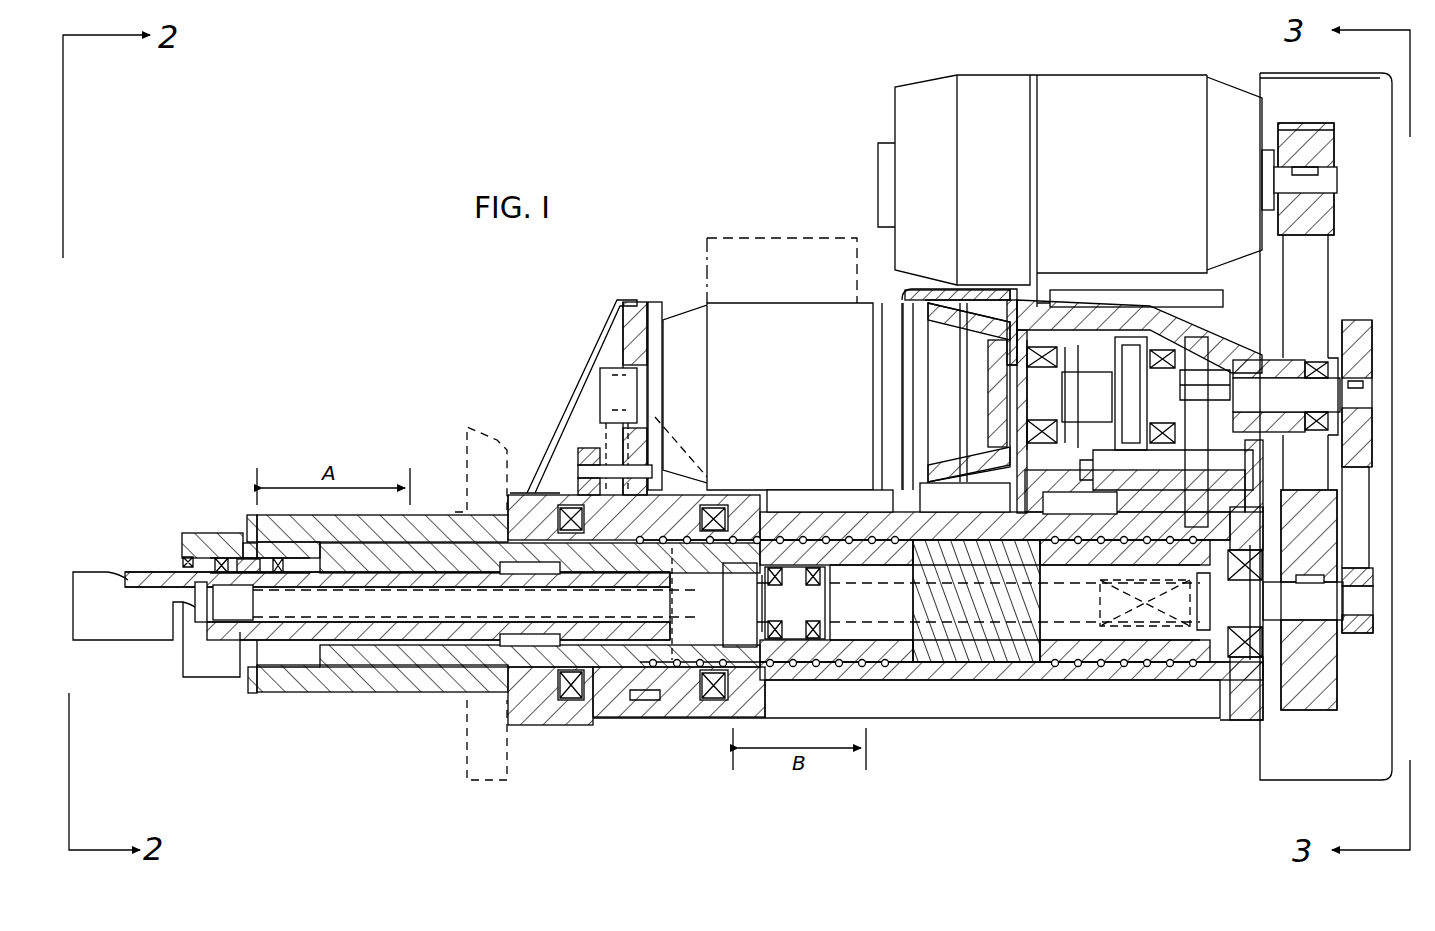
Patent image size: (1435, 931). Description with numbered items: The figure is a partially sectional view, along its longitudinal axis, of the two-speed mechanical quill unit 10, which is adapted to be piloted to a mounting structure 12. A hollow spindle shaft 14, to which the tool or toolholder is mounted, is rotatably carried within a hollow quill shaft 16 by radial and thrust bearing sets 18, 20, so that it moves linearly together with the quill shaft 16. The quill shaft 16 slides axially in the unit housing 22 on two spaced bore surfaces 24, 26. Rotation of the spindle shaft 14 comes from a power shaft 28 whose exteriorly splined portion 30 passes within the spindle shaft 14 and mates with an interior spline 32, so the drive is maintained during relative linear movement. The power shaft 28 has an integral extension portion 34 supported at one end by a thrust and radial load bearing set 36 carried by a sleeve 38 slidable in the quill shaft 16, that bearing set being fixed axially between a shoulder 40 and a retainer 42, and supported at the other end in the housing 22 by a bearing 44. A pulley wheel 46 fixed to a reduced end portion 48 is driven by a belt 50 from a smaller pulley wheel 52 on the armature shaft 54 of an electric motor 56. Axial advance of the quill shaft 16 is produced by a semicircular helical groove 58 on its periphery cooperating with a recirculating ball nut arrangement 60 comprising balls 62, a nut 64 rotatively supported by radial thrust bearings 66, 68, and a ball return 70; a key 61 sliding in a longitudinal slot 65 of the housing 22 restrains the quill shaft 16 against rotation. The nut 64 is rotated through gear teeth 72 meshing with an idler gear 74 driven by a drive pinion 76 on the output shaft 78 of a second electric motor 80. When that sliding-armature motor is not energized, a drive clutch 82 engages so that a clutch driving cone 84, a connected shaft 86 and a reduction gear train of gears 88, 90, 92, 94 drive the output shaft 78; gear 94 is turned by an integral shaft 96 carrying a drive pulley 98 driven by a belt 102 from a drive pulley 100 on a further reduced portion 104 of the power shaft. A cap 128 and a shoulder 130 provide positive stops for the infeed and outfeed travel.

The mechanical quill unit 10 is at (565, 383).
The mounting structure 12 is at (466, 445).
The spindle shaft 14 is at (142, 572).
The quill shaft 16 is at (226, 533).
The radial and thrust bearing set 18 is at (243, 556).
The radial and thrust bearing set 20 is at (520, 640).
The unit housing 22 is at (330, 700).
The bore surface 24 is at (366, 682).
The bore surface 26 is at (834, 672).
The power shaft 28 is at (805, 613).
The exteriorly splined portion 30 is at (598, 625).
The interior spline 32 is at (676, 603).
The extension portion 34 is at (903, 607).
The thrust and radial load bearing set 36 is at (842, 612).
The sleeve 38 is at (752, 690).
The shoulder 40 is at (830, 622).
The retainer 42 is at (776, 580).
The bearing 44 is at (1240, 655).
The pulley wheel 46 is at (1330, 686).
The reduced end portion 48 is at (1312, 615).
The belt 50 is at (1318, 278).
The smaller pulley wheel 52 is at (1320, 215).
The armature shaft 54 is at (1325, 184).
The electric motor 56 is at (1136, 75).
The semicircular helical groove 58 is at (1008, 662).
The recirculating ball nut arrangement 60 is at (645, 700).
The key 61 is at (1122, 600).
The balls 62 is at (683, 690).
The nut 64 is at (652, 700).
The longitudinal slot 65 is at (1058, 665).
The radial thrust bearing 66 is at (572, 508).
The radial thrust bearing 68 is at (722, 495).
The ball return 70 is at (668, 603).
The gear teeth 72 is at (626, 698).
The idler gear 74 is at (598, 452).
The drive pinion 76 is at (612, 368).
The output shaft 78 is at (650, 388).
The second electric motor 80 is at (692, 318).
The drive clutch 82 is at (912, 287).
The clutch driving cone 84 is at (968, 470).
The connected shaft 86 is at (1050, 399).
The gear 88 is at (1152, 340).
The gear 90 is at (1122, 483).
The gear 92 is at (1185, 505).
The gear 94 is at (1212, 376).
The integral shaft 96 is at (1285, 399).
The drive pulley 98 is at (1373, 343).
The drive pulley 100 is at (1374, 578).
The belt 102 is at (1368, 520).
The further reduced portion 104 is at (1374, 600).
The cap 128 is at (254, 693).
The shoulder 130 is at (240, 678).